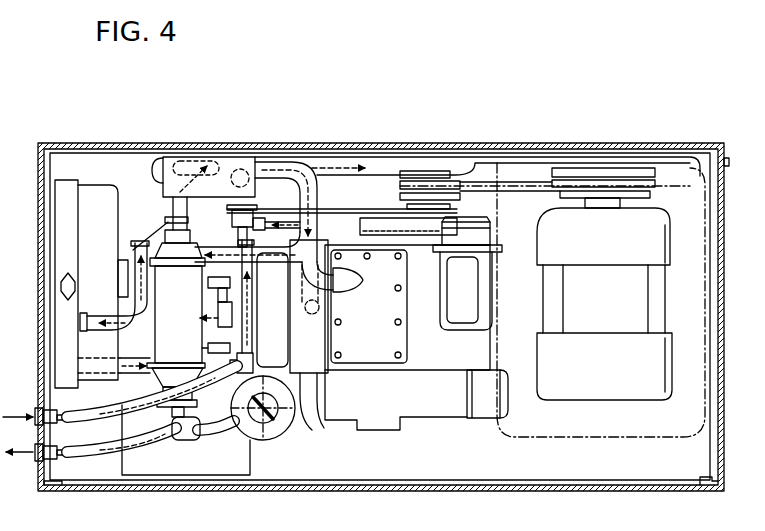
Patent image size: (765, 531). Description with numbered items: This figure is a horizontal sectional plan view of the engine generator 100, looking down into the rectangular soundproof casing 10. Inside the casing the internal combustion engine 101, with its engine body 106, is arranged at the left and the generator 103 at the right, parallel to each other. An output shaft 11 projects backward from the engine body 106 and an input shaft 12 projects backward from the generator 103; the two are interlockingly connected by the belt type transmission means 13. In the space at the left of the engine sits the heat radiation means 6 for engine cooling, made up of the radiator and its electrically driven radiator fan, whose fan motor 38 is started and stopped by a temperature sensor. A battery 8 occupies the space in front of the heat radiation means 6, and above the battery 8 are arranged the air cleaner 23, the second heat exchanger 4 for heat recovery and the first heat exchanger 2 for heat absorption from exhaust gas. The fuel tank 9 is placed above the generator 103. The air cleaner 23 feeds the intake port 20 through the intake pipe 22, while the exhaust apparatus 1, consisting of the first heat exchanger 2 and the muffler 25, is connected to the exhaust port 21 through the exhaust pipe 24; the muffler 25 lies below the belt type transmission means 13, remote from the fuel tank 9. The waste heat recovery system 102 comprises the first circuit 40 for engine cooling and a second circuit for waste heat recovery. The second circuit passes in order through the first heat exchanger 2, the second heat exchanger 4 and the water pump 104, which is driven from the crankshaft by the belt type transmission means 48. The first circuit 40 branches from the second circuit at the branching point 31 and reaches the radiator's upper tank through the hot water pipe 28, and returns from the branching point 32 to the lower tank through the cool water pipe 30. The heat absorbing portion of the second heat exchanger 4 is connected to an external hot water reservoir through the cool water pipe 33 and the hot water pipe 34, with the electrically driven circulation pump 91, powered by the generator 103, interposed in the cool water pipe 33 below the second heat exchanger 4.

The exhaust apparatus 1 is at (649, 142).
The first heat exchanger 2 is at (231, 148).
The second heat exchanger 4 is at (169, 317).
The heat radiation means 6 is at (55, 250).
The battery 8 is at (250, 462).
The fuel tank 9 is at (585, 440).
The soundproof casing 10 is at (362, 142).
The output shaft 11 is at (430, 259).
The input shaft 12 is at (620, 205).
The belt type transmission means 13 is at (486, 182).
The intake port 20 is at (334, 352).
The exhaust port 21 is at (322, 237).
The intake pipe 22 is at (316, 428).
The air cleaner 23 is at (288, 428).
The exhaust pipe 24 is at (318, 190).
The muffler 25 is at (549, 168).
The hot water pipe 28 is at (133, 248).
The cool water pipe 30 is at (140, 362).
The branching point 31 is at (147, 242).
The branching point 32 is at (258, 358).
The cool water pipe 33 is at (67, 408).
The hot water pipe 34 is at (107, 454).
The fan motor 38 is at (128, 278).
The first circuit 40 is at (100, 312).
The belt type transmission means 48 is at (384, 205).
The circulation pump 91 is at (238, 322).
The engine generator 100 is at (328, 103).
The internal combustion engine 101 is at (416, 447).
The waste heat recovery system 102 is at (149, 160).
The generator 103 is at (600, 402).
The water pump 104 is at (236, 231).
The engine body 106 is at (497, 352).